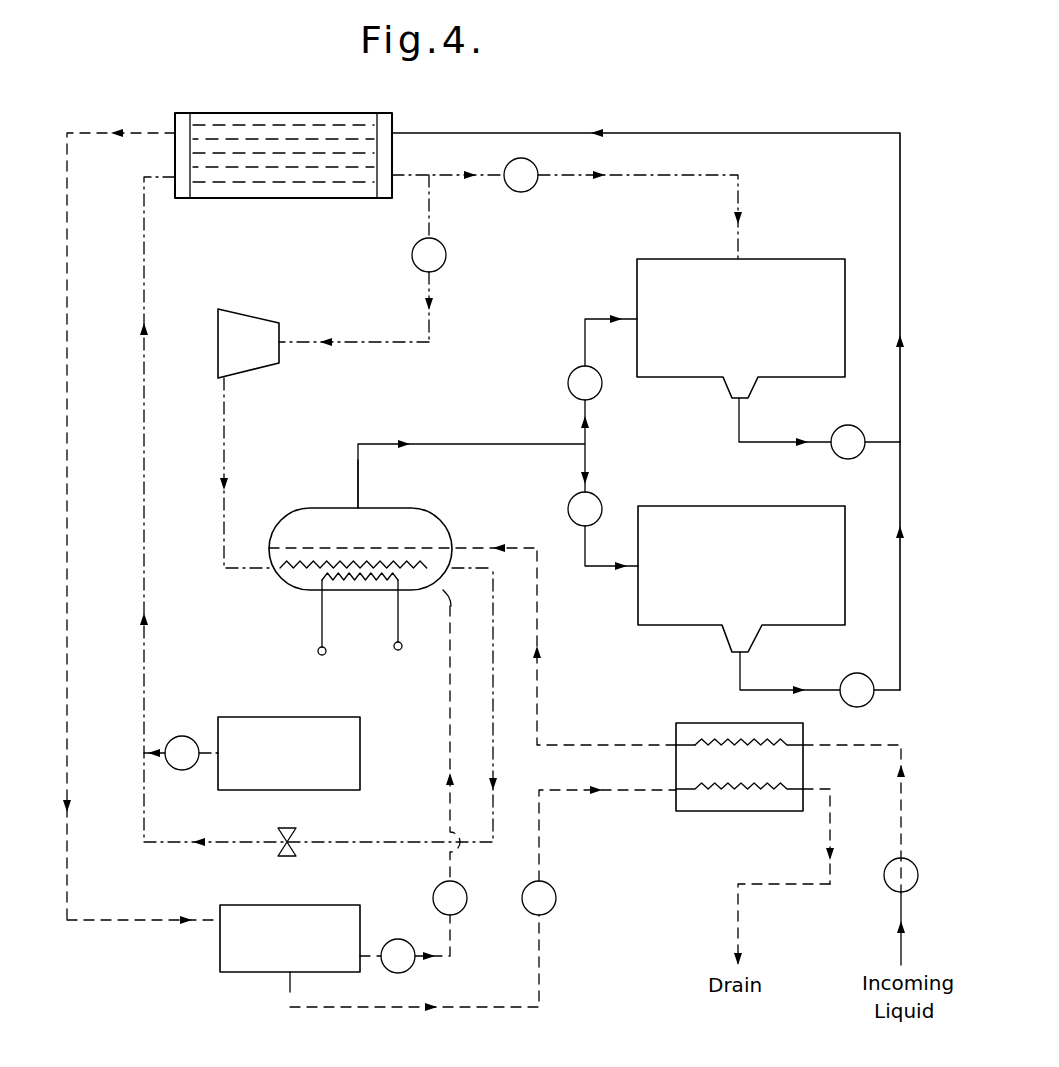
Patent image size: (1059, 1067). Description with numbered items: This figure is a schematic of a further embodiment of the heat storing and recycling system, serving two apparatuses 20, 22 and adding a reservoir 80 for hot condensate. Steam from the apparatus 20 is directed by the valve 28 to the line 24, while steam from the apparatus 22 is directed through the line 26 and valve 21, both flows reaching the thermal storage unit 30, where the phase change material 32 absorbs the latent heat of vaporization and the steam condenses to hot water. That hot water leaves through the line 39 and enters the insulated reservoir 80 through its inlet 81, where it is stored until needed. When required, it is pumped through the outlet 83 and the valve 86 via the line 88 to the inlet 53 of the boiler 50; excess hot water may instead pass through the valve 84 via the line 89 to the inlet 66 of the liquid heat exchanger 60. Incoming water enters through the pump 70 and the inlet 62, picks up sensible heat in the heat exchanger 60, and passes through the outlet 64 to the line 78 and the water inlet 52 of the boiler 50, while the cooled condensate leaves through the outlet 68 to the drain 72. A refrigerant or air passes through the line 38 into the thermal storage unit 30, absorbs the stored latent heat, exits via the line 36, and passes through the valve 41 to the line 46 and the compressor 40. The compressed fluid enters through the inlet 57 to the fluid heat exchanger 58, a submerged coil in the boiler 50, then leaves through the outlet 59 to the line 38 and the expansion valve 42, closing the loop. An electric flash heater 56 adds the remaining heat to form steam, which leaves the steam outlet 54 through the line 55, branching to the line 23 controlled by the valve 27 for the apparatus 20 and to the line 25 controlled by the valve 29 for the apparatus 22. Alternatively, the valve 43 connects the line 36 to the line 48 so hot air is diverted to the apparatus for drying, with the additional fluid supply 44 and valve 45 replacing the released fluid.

The apparatus 20 is at (796, 235).
The valve 21 is at (848, 675).
The apparatus 22 is at (750, 507).
The line 23 is at (590, 319).
The line 24 is at (900, 215).
The line 25 is at (583, 566).
The line 26 is at (900, 598).
The valve 27 is at (568, 383).
The valve 28 is at (835, 429).
The valve 29 is at (598, 498).
The thermal storage unit 30 is at (282, 113).
The phase change material 32 is at (315, 182).
The line 36 is at (398, 176).
The line 38 is at (144, 280).
The line 39 is at (67, 240).
The compressor 40 is at (253, 322).
The valve 41 is at (446, 255).
The expansion valve 42 is at (296, 840).
The valve 43 is at (521, 192).
The additional fluid supply 44 is at (283, 717).
The valve 45 is at (184, 736).
The line 46 is at (431, 334).
The line 48 is at (648, 177).
The boiler 50 is at (326, 508).
The water inlet 52 is at (452, 548).
The inlet 53 is at (448, 590).
The steam outlet 54 is at (362, 508).
The line 55 is at (472, 444).
The electric flash heater 56 is at (386, 590).
The inlet 57 is at (269, 570).
The fluid heat exchanger 58 is at (306, 572).
The outlet 59 is at (454, 576).
The liquid heat exchanger 60 is at (712, 723).
The inlet 62 is at (803, 748).
The outlet 64 is at (676, 745).
The inlet 66 is at (676, 790).
The outlet 68 is at (803, 789).
The pump 70 is at (915, 864).
The drain 72 is at (740, 962).
The line 78 is at (537, 684).
The reservoir 80 is at (248, 974).
The inlet 81 is at (220, 920).
The outlet 83 is at (380, 971).
The valve 84 is at (555, 892).
The valve 86 is at (434, 892).
The line 88 is at (450, 723).
The line 89 is at (462, 1009).